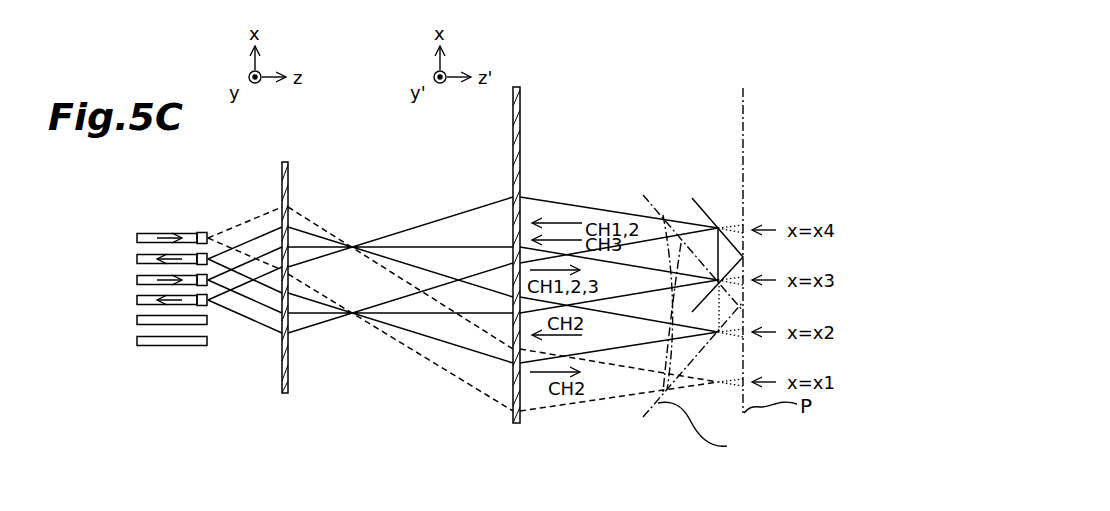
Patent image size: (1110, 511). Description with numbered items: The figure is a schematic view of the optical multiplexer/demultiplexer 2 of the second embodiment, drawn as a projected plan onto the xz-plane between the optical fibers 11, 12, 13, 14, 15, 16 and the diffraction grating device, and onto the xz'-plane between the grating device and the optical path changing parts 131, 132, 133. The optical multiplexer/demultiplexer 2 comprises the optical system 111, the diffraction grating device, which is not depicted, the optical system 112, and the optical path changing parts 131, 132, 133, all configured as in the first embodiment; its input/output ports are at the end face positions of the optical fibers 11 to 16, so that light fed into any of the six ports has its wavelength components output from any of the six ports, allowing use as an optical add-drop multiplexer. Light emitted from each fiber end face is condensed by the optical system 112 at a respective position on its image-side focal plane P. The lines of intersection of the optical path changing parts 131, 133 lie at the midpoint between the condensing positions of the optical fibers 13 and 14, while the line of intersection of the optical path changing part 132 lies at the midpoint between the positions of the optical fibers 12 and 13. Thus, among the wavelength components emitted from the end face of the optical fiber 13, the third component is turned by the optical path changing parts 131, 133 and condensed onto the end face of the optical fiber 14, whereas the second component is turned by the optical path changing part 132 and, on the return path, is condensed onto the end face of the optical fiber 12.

The optical multiplexer/demultiplexer 2 is at (658, 69).
The optical fiber 11 is at (137, 232).
The optical fiber 12 is at (170, 233).
The optical fiber 13 is at (197, 233).
The optical fiber 14 is at (143, 326).
The optical fiber 15 is at (167, 343).
The optical fiber 16 is at (205, 349).
The optical system 111 is at (285, 162).
The optical system 112 is at (517, 87).
The optical path changing part 131 is at (712, 213).
The optical path changing part 132 is at (712, 429).
The optical path changing part 133 is at (711, 215).